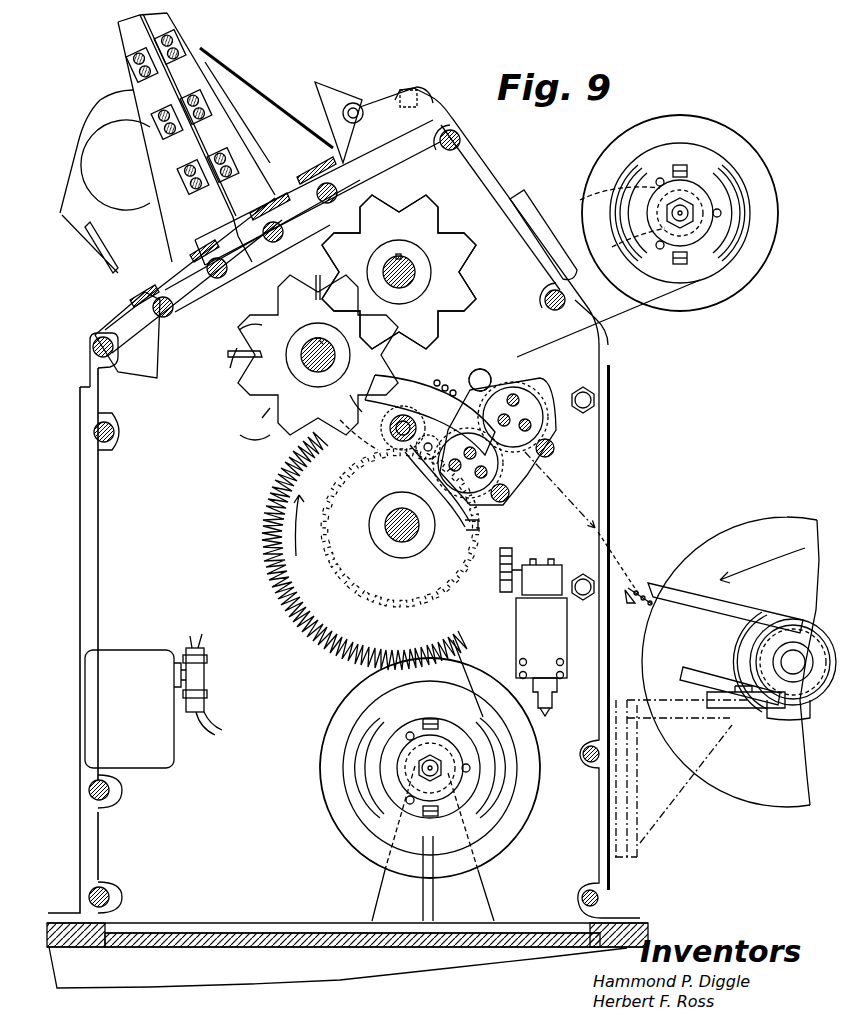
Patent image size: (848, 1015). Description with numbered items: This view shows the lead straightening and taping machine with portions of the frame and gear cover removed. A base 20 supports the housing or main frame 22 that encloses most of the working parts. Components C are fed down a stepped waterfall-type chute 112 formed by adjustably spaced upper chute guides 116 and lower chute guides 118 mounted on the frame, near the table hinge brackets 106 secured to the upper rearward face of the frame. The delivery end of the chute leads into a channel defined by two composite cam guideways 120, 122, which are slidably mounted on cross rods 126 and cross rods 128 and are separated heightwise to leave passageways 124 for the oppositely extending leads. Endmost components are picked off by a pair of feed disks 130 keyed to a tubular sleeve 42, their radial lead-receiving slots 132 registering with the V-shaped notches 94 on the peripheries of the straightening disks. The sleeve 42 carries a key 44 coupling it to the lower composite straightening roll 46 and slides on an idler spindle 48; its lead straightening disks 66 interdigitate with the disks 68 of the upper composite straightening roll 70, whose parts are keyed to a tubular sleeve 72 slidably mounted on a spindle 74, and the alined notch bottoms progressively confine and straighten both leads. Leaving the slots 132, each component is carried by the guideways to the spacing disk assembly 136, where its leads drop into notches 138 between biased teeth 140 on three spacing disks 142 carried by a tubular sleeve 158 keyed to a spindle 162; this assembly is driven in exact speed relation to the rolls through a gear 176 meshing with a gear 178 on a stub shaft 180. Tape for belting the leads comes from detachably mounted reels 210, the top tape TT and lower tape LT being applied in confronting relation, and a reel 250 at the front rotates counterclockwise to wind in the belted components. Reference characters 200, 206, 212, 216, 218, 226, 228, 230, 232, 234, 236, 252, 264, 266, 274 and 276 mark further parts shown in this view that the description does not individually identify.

The base 20 is at (192, 985).
The housing or main frame 22 is at (606, 348).
The tubular sleeve 42 is at (302, 345).
The key 44 is at (321, 340).
The lower composite straightening roll 46 is at (286, 375).
The idler spindle 48 is at (314, 338).
The lead straightening disks 66 is at (301, 355).
The straightening disks 68 is at (399, 265).
The upper composite straightening roll 70 is at (408, 252).
The tubular sleeve 72 is at (413, 266).
The spindle 74 is at (412, 282).
The V-shaped notches 94 is at (245, 430).
The table hinge brackets 106 is at (256, 82).
The stepped chute 112 is at (170, 23).
The upper chute guides 116 is at (197, 64).
The lower chute guides 118 is at (148, 158).
The composite cam guideway 120 is at (300, 238).
The composite cam guideway 122 is at (213, 288).
The passageways 124 is at (405, 372).
The cross rods 126 is at (316, 205).
The cross rods 128 is at (209, 273).
The feed disks 130 is at (228, 362).
The radial lead-receiving slots 132 is at (258, 412).
The spacing disk assembly 136 is at (323, 551).
The notches 138 is at (262, 536).
The biased teeth 140 is at (288, 452).
The spacing disks 142 is at (383, 440).
The tubular sleeve 158 is at (387, 530).
The spindle 162 is at (380, 548).
The gear 176 is at (400, 532).
The gear 178 is at (352, 404).
The stub shaft 180 is at (469, 380).
The clutch housing 200 is at (513, 433).
The clutch discs 206 is at (498, 470).
The reels 210 is at (502, 838).
The clutch tabs 212 is at (420, 812).
The hub 216 is at (420, 764).
The stand 218 is at (482, 885).
The small pinion 226 is at (425, 458).
The lever 228 is at (535, 218).
The rod 230 is at (495, 368).
The link 232 is at (478, 505).
The screw 234 is at (552, 440).
The connecting rod 236 is at (355, 455).
The reel 250 is at (757, 518).
The hub 252 is at (790, 685).
The bar 264 is at (755, 705).
The phantom line 266 is at (665, 808).
The foot 274 is at (800, 680).
The lever 276 is at (658, 585).
The components C is at (588, 539).
The top tape TT is at (584, 487).
The lower tape LT is at (430, 789).